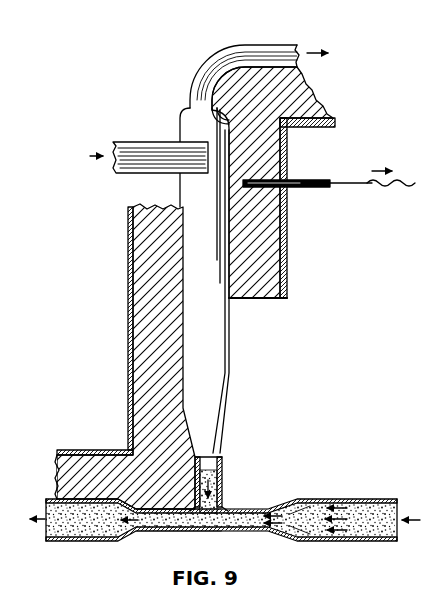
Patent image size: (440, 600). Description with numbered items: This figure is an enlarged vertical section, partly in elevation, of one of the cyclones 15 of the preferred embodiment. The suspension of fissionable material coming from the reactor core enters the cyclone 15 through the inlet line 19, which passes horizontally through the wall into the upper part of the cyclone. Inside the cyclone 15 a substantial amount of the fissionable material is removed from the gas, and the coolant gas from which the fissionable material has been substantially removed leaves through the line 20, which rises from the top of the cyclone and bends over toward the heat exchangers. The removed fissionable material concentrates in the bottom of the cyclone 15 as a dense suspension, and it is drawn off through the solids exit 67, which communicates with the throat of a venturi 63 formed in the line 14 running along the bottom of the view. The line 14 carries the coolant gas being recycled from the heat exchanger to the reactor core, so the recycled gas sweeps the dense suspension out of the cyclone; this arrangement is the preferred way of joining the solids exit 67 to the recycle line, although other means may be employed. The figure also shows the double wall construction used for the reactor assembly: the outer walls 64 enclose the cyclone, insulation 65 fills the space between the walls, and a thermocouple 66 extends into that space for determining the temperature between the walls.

The line 14 is at (96, 498).
The cyclone 15 is at (233, 375).
The line 19 is at (158, 142).
The line 20 is at (241, 45).
The venturi 63 is at (249, 510).
The outer walls 64 is at (130, 318).
The insulation 65 is at (146, 207).
The thermocouple 66 is at (298, 180).
The solids exit 67 is at (225, 489).